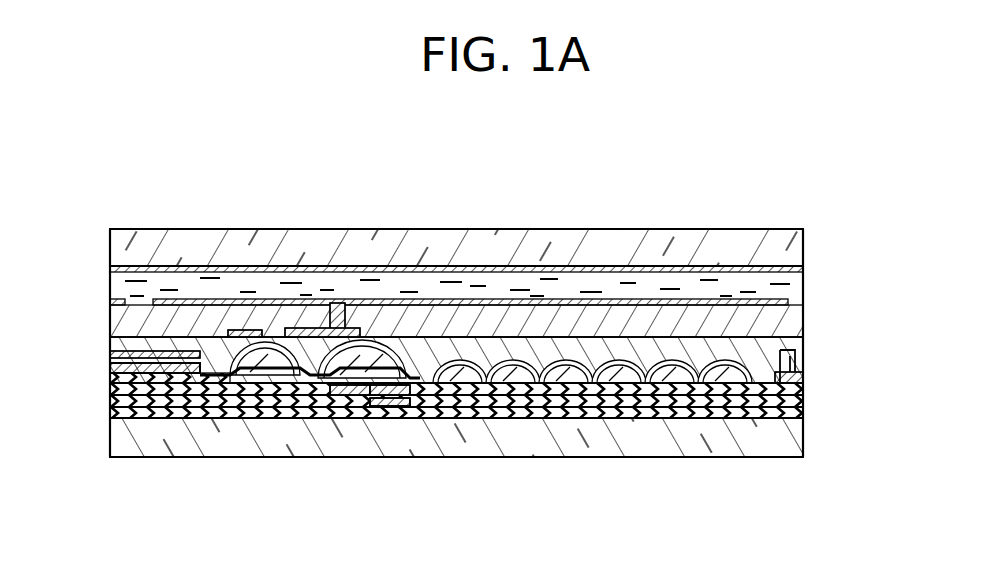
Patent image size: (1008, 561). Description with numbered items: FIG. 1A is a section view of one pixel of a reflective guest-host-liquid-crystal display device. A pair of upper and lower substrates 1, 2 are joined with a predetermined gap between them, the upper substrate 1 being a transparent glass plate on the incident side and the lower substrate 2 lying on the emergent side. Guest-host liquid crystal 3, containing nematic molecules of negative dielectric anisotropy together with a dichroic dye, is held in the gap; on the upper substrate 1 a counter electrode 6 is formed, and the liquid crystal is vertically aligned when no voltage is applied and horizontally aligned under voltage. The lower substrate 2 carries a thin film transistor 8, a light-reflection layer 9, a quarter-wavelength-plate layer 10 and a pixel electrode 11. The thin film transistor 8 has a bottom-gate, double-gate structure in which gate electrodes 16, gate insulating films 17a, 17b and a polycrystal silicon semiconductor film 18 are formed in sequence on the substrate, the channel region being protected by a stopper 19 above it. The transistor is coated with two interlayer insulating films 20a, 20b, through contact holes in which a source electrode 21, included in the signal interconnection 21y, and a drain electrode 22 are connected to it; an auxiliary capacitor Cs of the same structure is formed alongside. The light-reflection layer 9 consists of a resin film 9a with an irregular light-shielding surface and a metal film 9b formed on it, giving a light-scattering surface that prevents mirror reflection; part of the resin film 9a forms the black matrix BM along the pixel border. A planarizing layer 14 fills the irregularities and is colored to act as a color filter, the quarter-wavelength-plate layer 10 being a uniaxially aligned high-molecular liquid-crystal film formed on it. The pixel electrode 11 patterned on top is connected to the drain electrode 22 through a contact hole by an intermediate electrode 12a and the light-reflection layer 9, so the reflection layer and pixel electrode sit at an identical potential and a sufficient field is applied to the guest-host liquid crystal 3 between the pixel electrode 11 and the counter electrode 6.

The upper substrate 1 is at (780, 248).
The lower substrate 2 is at (722, 432).
The guest-host liquid crystal 3 is at (790, 287).
The counter electrode 6 is at (660, 268).
The thin film transistor 8 is at (243, 424).
The light-reflection layer 9 is at (689, 354).
The resin film 9a is at (110, 362).
The metal film 9b is at (182, 350).
The quarter-wavelength-plate layer 10 is at (497, 318).
The pixel electrode 11 is at (603, 299).
The intermediate electrode 12a is at (342, 326).
The planarizing layer 14 is at (780, 327).
The gate electrodes 16 is at (203, 418).
The gate insulating film 17a is at (748, 418).
The gate insulating film 17b is at (805, 416).
The semiconductor film 18 is at (440, 405).
The stopper 19 is at (298, 410).
The interlayer insulating film 20a is at (805, 411).
The interlayer insulating film 20b is at (805, 388).
The source electrode 21 is at (165, 418).
The signal interconnection 21y is at (127, 418).
The drain electrode 22 is at (345, 405).
The black matrix BM is at (147, 350).
The auxiliary capacitor Cs is at (387, 424).